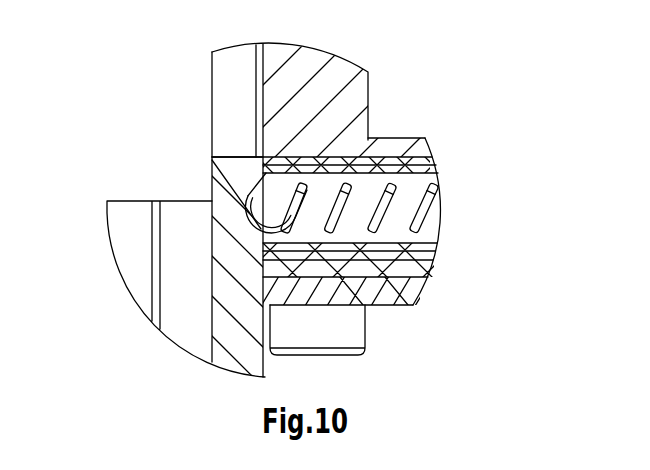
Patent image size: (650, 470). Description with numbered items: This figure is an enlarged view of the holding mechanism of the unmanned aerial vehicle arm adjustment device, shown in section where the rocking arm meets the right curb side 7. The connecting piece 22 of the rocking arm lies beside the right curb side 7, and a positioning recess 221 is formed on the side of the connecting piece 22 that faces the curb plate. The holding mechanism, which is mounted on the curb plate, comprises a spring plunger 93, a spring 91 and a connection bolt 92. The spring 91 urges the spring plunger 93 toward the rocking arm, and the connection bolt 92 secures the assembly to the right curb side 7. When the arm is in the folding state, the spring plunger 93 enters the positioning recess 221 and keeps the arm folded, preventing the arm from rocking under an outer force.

The right curb side 7 is at (338, 92).
The connecting piece 22 is at (236, 278).
The positioning recess 221 is at (214, 198).
The spring plunger 93 is at (262, 190).
The spring 91 is at (437, 196).
The connection bolt 92 is at (393, 310).